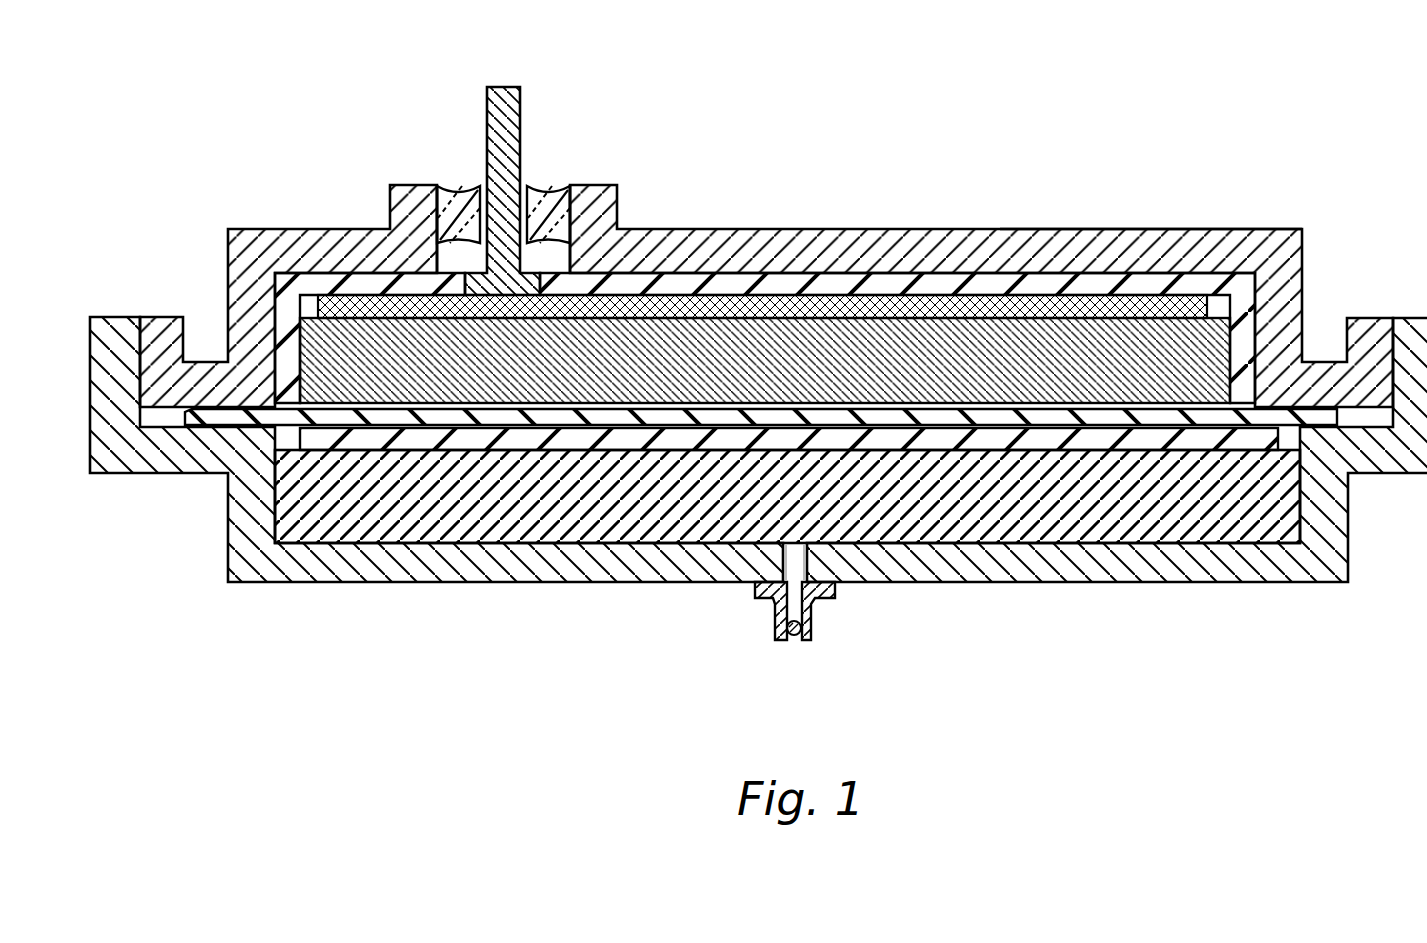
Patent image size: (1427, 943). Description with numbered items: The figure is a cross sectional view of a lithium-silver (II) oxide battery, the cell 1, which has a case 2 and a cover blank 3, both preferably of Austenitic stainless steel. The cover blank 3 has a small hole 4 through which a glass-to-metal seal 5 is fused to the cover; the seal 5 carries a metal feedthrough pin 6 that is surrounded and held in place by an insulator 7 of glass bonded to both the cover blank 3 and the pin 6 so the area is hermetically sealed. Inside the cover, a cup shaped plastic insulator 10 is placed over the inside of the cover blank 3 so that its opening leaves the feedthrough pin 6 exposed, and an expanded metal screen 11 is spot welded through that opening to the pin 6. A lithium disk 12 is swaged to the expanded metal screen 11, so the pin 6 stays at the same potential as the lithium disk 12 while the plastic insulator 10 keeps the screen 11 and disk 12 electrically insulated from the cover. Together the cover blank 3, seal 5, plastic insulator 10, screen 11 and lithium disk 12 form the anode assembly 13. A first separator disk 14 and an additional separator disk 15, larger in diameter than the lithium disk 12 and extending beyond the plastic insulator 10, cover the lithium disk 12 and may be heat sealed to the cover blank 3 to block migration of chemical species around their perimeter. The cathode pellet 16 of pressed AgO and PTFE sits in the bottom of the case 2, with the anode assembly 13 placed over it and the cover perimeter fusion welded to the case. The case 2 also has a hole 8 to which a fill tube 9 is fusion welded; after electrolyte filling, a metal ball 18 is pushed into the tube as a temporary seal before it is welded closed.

The cell 1 is at (1165, 644).
The case 2 is at (1328, 502).
The cover blank 3 is at (1284, 273).
The small hole 4 is at (450, 272).
The glass-to-metal seal 5 is at (560, 170).
The feedthrough pin 6 is at (520, 92).
The insulator 7 is at (464, 190).
The hole 8 is at (795, 562).
The fill tube 9 is at (815, 615).
The plastic insulator 10 is at (680, 285).
The expanded metal screen 11 is at (722, 300).
The lithium disk 12 is at (762, 330).
The anode assembly 13 is at (1235, 216).
The first separator disk 14 is at (605, 440).
The additional separator disk 15 is at (498, 418).
The cathode pellet 16 is at (683, 497).
The metal ball 18 is at (792, 640).